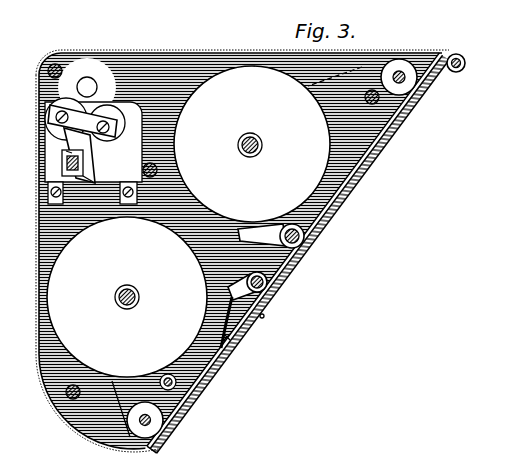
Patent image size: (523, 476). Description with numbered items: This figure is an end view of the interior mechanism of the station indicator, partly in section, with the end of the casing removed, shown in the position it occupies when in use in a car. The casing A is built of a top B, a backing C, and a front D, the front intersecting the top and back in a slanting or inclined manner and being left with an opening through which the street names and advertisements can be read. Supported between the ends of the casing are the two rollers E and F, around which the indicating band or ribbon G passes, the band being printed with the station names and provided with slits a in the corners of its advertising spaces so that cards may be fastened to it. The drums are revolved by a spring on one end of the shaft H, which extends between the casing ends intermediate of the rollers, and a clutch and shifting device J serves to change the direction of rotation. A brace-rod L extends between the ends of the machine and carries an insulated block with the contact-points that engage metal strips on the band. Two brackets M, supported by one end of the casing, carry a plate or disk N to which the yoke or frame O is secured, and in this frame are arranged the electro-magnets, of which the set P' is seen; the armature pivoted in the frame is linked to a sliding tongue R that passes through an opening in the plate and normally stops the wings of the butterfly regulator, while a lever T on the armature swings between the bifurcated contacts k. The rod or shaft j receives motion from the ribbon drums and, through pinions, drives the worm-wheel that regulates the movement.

The casing A is at (237, 252).
The top B is at (217, 52).
The backing C is at (36, 244).
The front D is at (320, 237).
The roller E is at (252, 144).
The roller F is at (127, 297).
The indicating band or ribbon G is at (362, 67).
The shaft H is at (173, 164).
The clutch and shifting device J is at (306, 243).
The brace-rod L is at (277, 296).
The brackets M is at (45, 197).
The plate or disk N is at (93, 140).
The yoke or frame O is at (79, 155).
The set of electro-magnets P' is at (61, 122).
The sliding or movable tongue R is at (94, 174).
The lever T is at (62, 166).
The slits a is at (246, 333).
The split or bifurcated metal contact k is at (66, 152).
The rod or shaft j is at (92, 84).